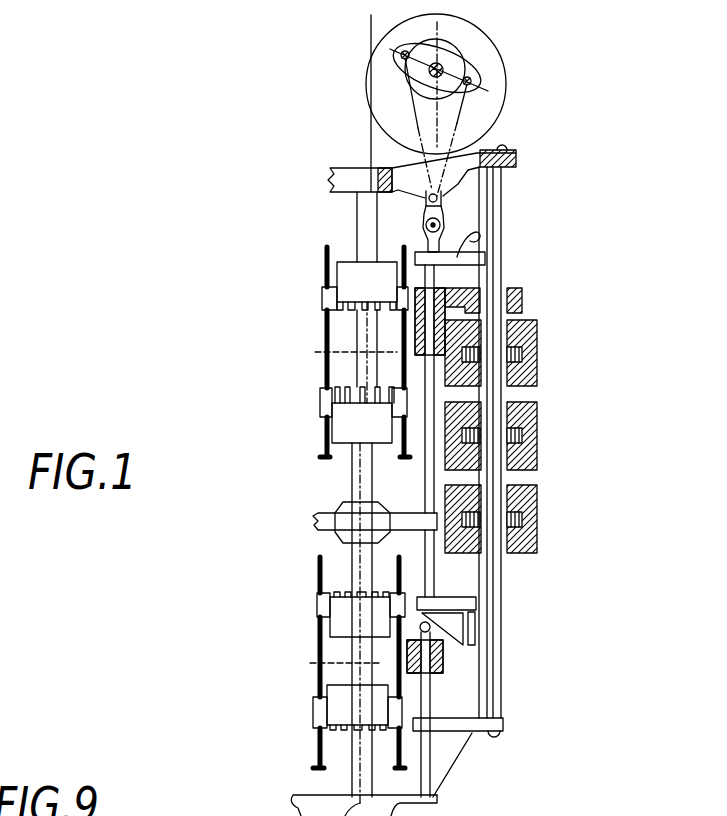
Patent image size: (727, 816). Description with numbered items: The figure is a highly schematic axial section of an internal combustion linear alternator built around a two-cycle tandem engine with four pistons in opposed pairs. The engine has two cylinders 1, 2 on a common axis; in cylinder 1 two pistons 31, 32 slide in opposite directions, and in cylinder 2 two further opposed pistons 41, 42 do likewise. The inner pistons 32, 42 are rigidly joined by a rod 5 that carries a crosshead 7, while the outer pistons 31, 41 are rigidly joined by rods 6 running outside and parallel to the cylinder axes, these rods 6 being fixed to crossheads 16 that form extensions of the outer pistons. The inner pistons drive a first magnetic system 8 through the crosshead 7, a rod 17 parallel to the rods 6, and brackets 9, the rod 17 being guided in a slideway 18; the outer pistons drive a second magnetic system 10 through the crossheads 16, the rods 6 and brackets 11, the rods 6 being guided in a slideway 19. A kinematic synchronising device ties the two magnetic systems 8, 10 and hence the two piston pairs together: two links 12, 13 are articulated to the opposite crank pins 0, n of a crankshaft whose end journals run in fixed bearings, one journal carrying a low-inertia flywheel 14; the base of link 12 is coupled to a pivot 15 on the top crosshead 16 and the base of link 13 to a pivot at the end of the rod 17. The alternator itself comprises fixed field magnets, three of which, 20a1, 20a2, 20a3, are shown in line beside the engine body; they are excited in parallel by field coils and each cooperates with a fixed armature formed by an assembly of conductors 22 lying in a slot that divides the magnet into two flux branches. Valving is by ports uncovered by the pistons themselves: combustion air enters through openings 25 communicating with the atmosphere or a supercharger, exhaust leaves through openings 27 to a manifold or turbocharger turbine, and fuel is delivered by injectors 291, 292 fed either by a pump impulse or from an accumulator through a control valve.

The crank pin 0 is at (405, 55).
The crank pin n is at (467, 81).
The cylinder 1 is at (325, 364).
The cylinder 2 is at (320, 643).
The piston 31 is at (355, 287).
The piston 32 is at (350, 428).
The piston 41 is at (350, 710).
The piston 42 is at (343, 617).
The rod 5 is at (355, 560).
The rods 6 is at (426, 698).
The crosshead 7 is at (317, 520).
The first magnetic system 8 is at (482, 577).
The brackets 9 is at (453, 623).
The second magnetic system 10 is at (494, 598).
The brackets 11 is at (440, 765).
The link 12 is at (418, 128).
The link 13 is at (457, 123).
The low-inertia flywheel 14 is at (362, 80).
The pivot 15 is at (430, 199).
The crossheads 16 is at (340, 182).
The rod 17 is at (433, 225).
The guide element or slideway 18 is at (418, 308).
The guide element or slideway 19 is at (438, 662).
The field magnet 20a1 is at (528, 380).
The field magnet 20a2 is at (528, 435).
The field magnet 20a3 is at (525, 527).
The conductors 22 is at (522, 355).
The openings 25 is at (325, 303).
The openings 27 is at (325, 404).
The injector 291 is at (365, 352).
The injector 292 is at (358, 663).